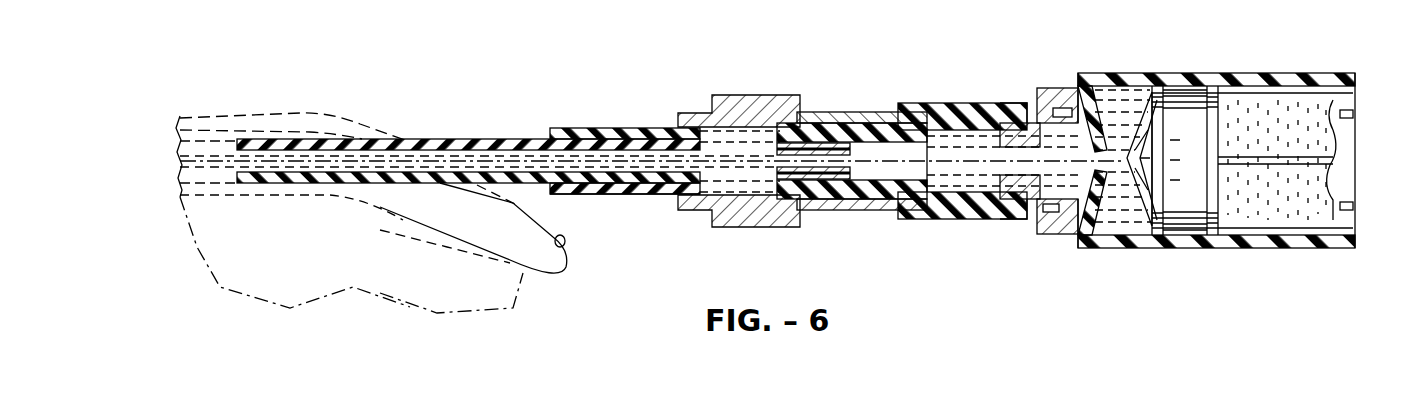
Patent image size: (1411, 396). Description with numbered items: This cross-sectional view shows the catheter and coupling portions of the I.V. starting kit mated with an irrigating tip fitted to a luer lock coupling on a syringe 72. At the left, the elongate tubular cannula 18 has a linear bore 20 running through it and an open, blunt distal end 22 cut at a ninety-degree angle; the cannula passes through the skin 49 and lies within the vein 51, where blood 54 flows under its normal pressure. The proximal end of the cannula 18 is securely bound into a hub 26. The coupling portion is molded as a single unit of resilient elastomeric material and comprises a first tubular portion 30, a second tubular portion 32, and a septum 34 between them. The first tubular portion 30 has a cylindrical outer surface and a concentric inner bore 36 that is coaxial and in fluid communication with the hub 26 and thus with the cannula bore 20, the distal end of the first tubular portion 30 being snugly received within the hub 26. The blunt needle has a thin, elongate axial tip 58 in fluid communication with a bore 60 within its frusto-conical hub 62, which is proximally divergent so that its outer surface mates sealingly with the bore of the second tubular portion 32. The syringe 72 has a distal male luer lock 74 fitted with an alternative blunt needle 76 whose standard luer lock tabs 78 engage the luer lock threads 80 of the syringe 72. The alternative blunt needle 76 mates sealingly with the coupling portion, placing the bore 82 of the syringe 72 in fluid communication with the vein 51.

The cannula 18 is at (424, 139).
The linear bore 20 is at (492, 163).
The distal end 22 is at (233, 183).
The hub 26 is at (640, 197).
The first tubular portion 30 is at (790, 123).
The second tubular portion 32 is at (953, 103).
The septum 34 is at (850, 202).
The inner bore 36 is at (817, 123).
The skin 49 is at (305, 108).
The vein 51 is at (447, 250).
The blood 54 is at (210, 158).
The axial tip 58 is at (777, 172).
The bore 60 is at (943, 163).
The hub 62 is at (982, 213).
The syringe 72 is at (1303, 72).
The male luer lock 74 is at (1057, 88).
The alternative blunt needle 76 is at (977, 103).
The luer lock tabs 78 is at (1078, 113).
The luer lock threads 80 is at (1045, 212).
The bore 82 is at (1120, 207).